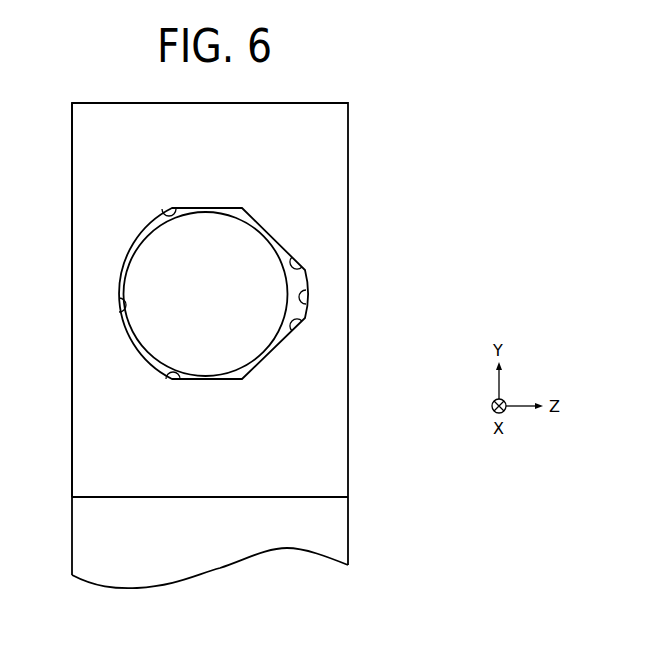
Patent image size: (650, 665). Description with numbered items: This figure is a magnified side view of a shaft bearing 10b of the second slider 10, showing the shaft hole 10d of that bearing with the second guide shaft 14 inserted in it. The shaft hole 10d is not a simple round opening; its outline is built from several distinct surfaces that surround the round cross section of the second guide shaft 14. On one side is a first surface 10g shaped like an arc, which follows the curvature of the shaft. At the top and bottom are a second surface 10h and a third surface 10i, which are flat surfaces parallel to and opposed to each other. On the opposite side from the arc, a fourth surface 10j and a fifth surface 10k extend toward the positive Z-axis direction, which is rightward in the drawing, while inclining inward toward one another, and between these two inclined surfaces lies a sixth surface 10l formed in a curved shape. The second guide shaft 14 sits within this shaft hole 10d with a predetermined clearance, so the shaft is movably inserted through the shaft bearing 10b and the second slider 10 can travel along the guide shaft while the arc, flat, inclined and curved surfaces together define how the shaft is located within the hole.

The second slider 10 is at (333, 520).
The shaft bearing 10b is at (72, 386).
The shaft hole 10d is at (293, 340).
The first surface 10g is at (120, 310).
The second surface 10h is at (165, 210).
The third surface 10i is at (168, 381).
The fourth surface 10j is at (300, 268).
The fifth surface 10k is at (299, 324).
The sixth surface 10l is at (307, 297).
The second guide shaft 14 is at (158, 270).